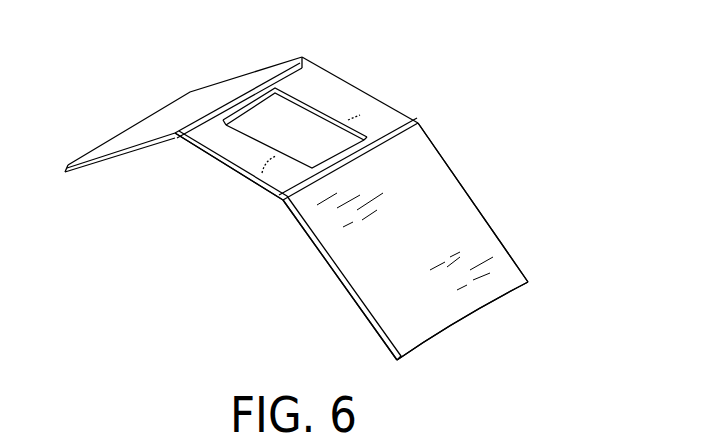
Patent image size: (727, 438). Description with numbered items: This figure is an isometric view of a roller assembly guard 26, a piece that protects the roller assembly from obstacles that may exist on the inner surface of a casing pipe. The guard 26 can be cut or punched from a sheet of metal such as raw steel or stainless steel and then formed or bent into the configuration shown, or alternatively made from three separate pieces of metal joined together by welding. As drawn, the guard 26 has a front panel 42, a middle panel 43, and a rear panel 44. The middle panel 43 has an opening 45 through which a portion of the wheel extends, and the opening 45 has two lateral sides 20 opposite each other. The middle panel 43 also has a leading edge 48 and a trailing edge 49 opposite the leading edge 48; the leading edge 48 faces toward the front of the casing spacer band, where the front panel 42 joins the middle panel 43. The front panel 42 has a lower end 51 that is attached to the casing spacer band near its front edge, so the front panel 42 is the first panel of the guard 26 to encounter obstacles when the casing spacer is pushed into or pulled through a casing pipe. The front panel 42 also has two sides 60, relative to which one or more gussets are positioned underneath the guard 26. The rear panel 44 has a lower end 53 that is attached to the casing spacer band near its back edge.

The guard 26 is at (487, 98).
The front panel 42 is at (424, 251).
The middle panel 43 is at (353, 107).
The rear panel 44 is at (215, 93).
The opening 45 is at (277, 138).
The leading edge 48 is at (285, 203).
The trailing edge 49 is at (175, 140).
The lower end of front panel 51 is at (417, 347).
The lower end of rear panel 53 is at (118, 138).
The sides of front panel 60 is at (492, 223).
The lateral sides 20 is at (323, 148).